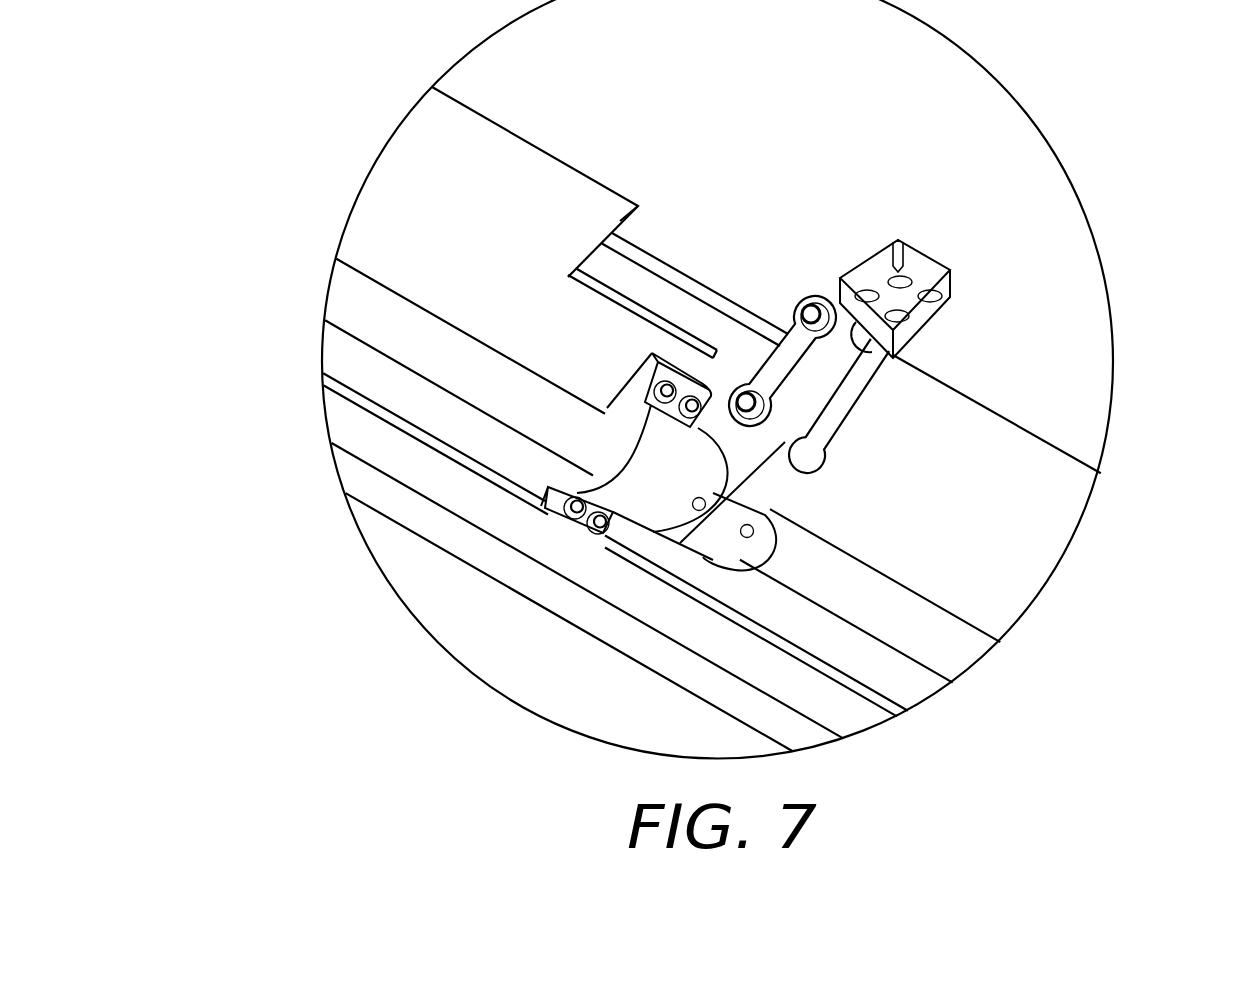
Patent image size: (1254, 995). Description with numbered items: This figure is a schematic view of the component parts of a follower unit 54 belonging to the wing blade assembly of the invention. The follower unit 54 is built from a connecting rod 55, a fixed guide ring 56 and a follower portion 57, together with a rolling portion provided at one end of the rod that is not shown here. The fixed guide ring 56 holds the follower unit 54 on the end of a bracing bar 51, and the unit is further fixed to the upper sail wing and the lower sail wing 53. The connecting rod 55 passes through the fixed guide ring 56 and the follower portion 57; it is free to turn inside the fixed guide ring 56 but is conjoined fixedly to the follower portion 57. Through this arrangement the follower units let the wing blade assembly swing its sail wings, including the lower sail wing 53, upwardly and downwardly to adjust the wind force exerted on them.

The bracing bar 51 is at (492, 241).
The lower sail wing 53 is at (1027, 332).
The follower unit 54 is at (837, 443).
The connecting rod 55 is at (547, 423).
The fixed guide ring 56 is at (651, 490).
The follower portion 57 is at (917, 263).